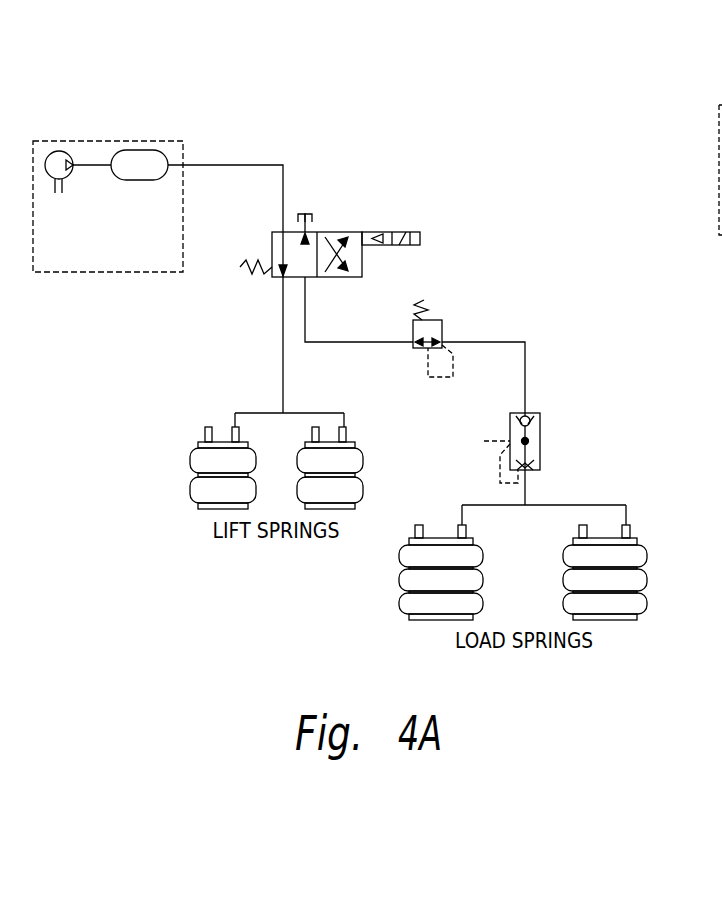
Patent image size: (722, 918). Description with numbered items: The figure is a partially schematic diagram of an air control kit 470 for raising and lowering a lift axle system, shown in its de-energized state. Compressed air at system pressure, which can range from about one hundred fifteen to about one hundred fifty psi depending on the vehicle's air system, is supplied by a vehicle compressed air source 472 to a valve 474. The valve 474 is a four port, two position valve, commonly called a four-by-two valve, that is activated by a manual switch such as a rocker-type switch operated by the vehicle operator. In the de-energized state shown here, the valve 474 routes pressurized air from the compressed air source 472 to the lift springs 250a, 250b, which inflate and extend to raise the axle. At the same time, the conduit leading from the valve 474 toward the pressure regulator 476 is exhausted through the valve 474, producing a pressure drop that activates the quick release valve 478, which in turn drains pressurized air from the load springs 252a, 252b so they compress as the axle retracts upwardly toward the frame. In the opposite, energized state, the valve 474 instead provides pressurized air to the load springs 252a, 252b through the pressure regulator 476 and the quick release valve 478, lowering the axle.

The air control kit 470 is at (221, 579).
The vehicle compressed air source 472 is at (108, 141).
The valve 474 is at (337, 232).
The pressure regulator 476 is at (436, 320).
The quick release valve 478 is at (540, 447).
The lift spring 250a is at (190, 462).
The lift spring 250b is at (363, 462).
The load spring 252a is at (399, 598).
The load spring 252b is at (647, 597).